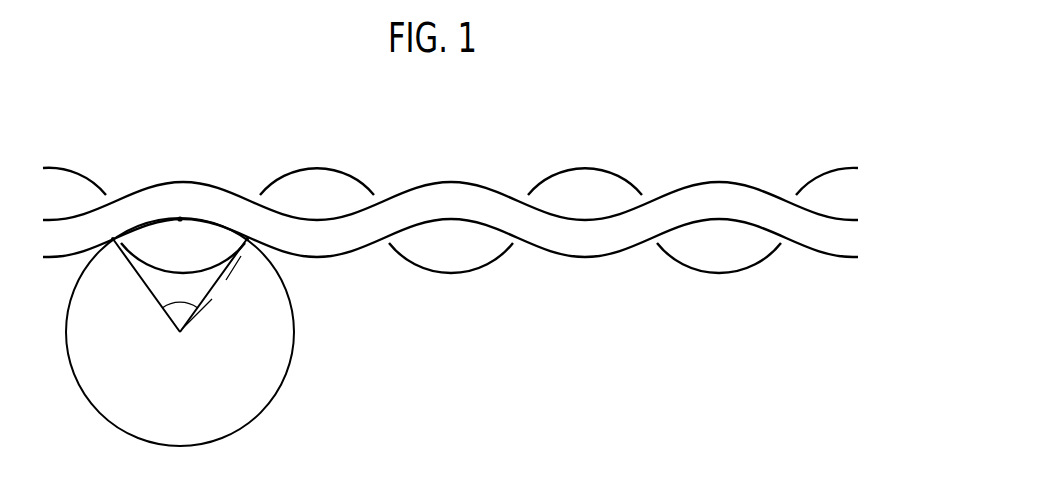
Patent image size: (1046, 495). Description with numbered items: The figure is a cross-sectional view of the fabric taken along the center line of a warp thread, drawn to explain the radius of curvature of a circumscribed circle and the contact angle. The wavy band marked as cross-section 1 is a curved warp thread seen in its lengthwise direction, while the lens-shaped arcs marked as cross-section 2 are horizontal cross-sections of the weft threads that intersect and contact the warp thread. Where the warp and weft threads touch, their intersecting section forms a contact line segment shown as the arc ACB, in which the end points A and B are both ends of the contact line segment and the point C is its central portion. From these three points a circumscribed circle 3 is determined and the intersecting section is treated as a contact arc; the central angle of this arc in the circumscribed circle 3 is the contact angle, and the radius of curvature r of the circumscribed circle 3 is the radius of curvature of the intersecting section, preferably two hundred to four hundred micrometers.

The cross-section of curved warp thread 1 is at (157, 200).
The horizontal cross-section of weft thread 2 is at (199, 247).
The circumscribed circle 3 is at (278, 390).
The central portion of contact line segment C is at (180, 219).
The one end of contact line segment A is at (113, 241).
The one end of contact line segment B is at (245, 241).
The radius of curvature of intersecting section r is at (180, 285).